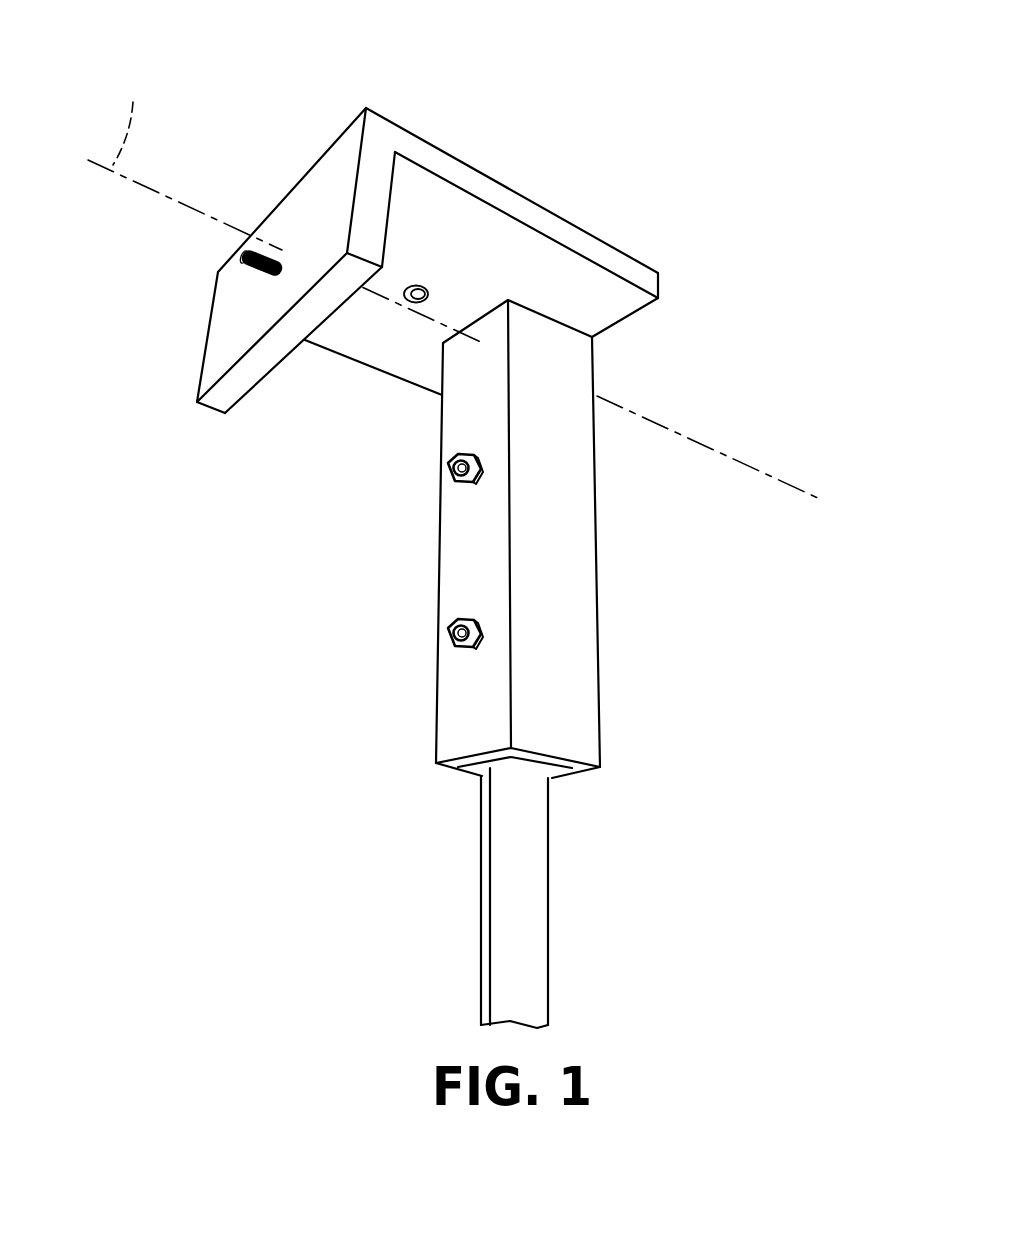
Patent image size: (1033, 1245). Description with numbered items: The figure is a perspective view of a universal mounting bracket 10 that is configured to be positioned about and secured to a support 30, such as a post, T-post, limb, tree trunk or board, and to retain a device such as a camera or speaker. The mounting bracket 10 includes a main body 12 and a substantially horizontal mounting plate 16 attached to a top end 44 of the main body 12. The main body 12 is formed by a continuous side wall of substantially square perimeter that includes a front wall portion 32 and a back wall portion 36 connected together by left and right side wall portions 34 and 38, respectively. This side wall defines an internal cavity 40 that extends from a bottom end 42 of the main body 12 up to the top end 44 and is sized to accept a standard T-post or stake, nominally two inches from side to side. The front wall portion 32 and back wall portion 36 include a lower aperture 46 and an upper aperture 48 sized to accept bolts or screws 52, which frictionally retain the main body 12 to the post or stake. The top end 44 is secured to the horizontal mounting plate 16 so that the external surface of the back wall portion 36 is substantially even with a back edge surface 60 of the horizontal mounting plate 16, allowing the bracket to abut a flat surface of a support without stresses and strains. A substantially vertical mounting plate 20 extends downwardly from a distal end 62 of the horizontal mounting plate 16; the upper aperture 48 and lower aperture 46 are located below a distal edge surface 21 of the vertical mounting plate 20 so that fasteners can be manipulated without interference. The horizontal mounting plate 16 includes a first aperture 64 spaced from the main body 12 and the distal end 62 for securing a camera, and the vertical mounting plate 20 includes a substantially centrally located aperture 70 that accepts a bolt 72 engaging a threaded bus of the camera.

The universal mounting bracket 10 is at (454, 519).
The main body 12 is at (517, 566).
The substantially horizontal mounting plate 16 is at (516, 203).
The substantially vertical mounting plate 20 is at (253, 311).
The distal edge surface 21 is at (227, 392).
The support 30 is at (550, 390).
The front wall portion 32 is at (475, 547).
The left side wall portion 34 is at (462, 768).
The back wall portion 36 is at (597, 595).
The right side wall portion 38 is at (553, 545).
The internal cavity 40 is at (527, 763).
The bottom end 42 is at (481, 782).
The top end 44 is at (573, 345).
The lower aperture 46 is at (477, 653).
The upper aperture 48 is at (477, 483).
The bolts or screws 52 is at (450, 465).
The back edge surface 60 is at (620, 298).
The distal end 62 is at (380, 107).
The first aperture 64 is at (438, 285).
The aperture 70 is at (262, 270).
The bolt 72 is at (251, 250).